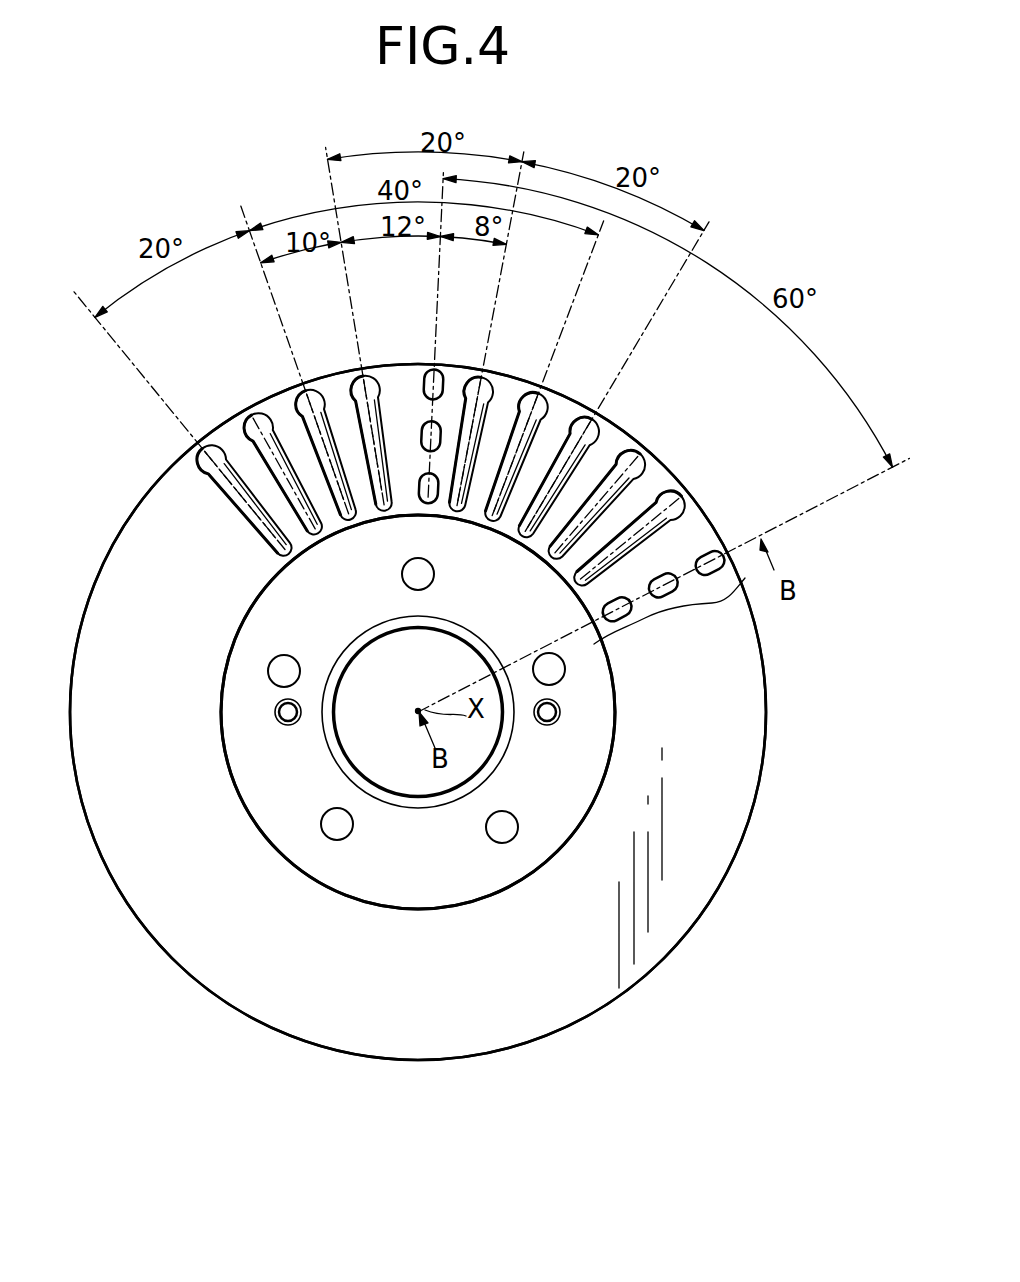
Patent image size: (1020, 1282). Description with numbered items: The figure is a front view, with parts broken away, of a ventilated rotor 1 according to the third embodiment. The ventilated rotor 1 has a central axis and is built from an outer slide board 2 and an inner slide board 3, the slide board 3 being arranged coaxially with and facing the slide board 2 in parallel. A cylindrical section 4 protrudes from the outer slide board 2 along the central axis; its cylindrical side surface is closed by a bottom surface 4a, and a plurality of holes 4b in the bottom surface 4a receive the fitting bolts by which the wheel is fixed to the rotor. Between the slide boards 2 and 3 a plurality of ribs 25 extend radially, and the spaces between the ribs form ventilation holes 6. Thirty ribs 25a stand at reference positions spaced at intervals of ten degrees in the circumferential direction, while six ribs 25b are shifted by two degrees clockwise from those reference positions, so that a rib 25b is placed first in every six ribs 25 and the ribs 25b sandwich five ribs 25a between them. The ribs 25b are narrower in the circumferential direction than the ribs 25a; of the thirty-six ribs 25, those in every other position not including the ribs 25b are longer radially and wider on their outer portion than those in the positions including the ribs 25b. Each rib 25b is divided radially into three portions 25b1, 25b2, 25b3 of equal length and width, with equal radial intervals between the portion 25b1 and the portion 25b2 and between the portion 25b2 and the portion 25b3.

The ventilated rotor 1 is at (822, 720).
The slide board 2 is at (698, 532).
The slide board 3 is at (742, 786).
The cylindrical section 4 is at (319, 776).
The bottom surface 4a is at (398, 816).
The holes 4b is at (437, 579).
The ventilation holes 6 is at (503, 423).
The ribs 25 is at (473, 495).
The ribs 25a is at (363, 378).
The ribs 25b is at (516, 495).
The rib portion 25b1 is at (435, 371).
The rib portion 25b2 is at (432, 420).
The rib portion 25b3 is at (497, 514).